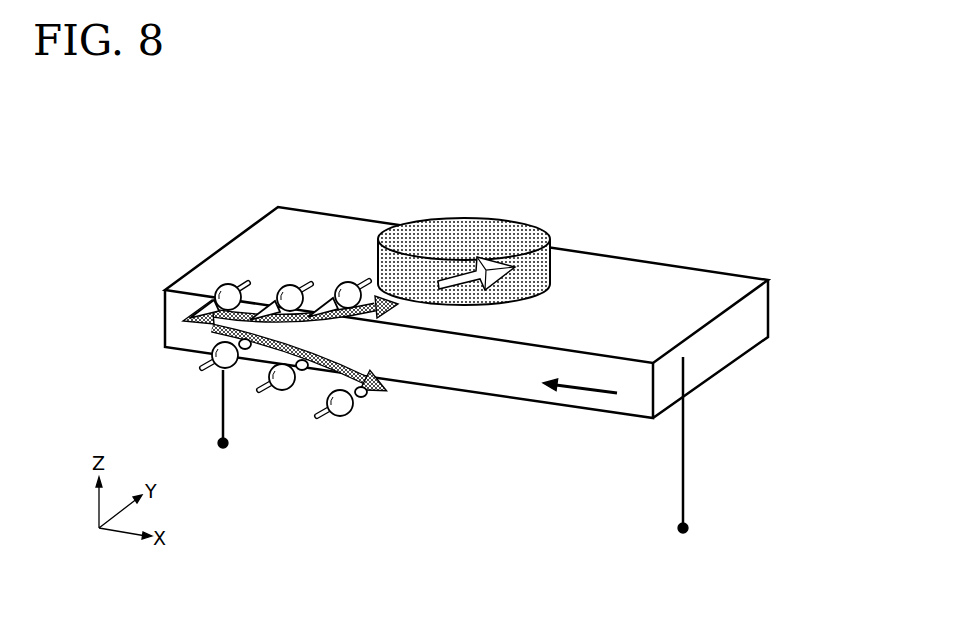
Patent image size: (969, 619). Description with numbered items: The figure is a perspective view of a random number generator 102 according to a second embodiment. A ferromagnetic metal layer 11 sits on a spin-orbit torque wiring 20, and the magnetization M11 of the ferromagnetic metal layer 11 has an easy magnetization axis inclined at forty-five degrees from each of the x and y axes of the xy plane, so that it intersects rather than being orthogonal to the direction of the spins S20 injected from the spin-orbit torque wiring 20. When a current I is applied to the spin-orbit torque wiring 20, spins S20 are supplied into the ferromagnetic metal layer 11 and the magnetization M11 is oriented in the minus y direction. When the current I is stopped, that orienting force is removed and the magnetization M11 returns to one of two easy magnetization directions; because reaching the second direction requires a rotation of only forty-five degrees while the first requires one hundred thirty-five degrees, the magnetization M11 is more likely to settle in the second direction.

The random number generator 102 is at (694, 166).
The ferromagnetic metal layer 11 is at (537, 282).
The spin-orbit torque wiring 20 is at (655, 337).
The magnetization of the ferromagnetic metal layer M11 is at (470, 237).
The spins S20 is at (222, 287).
The current I is at (573, 393).